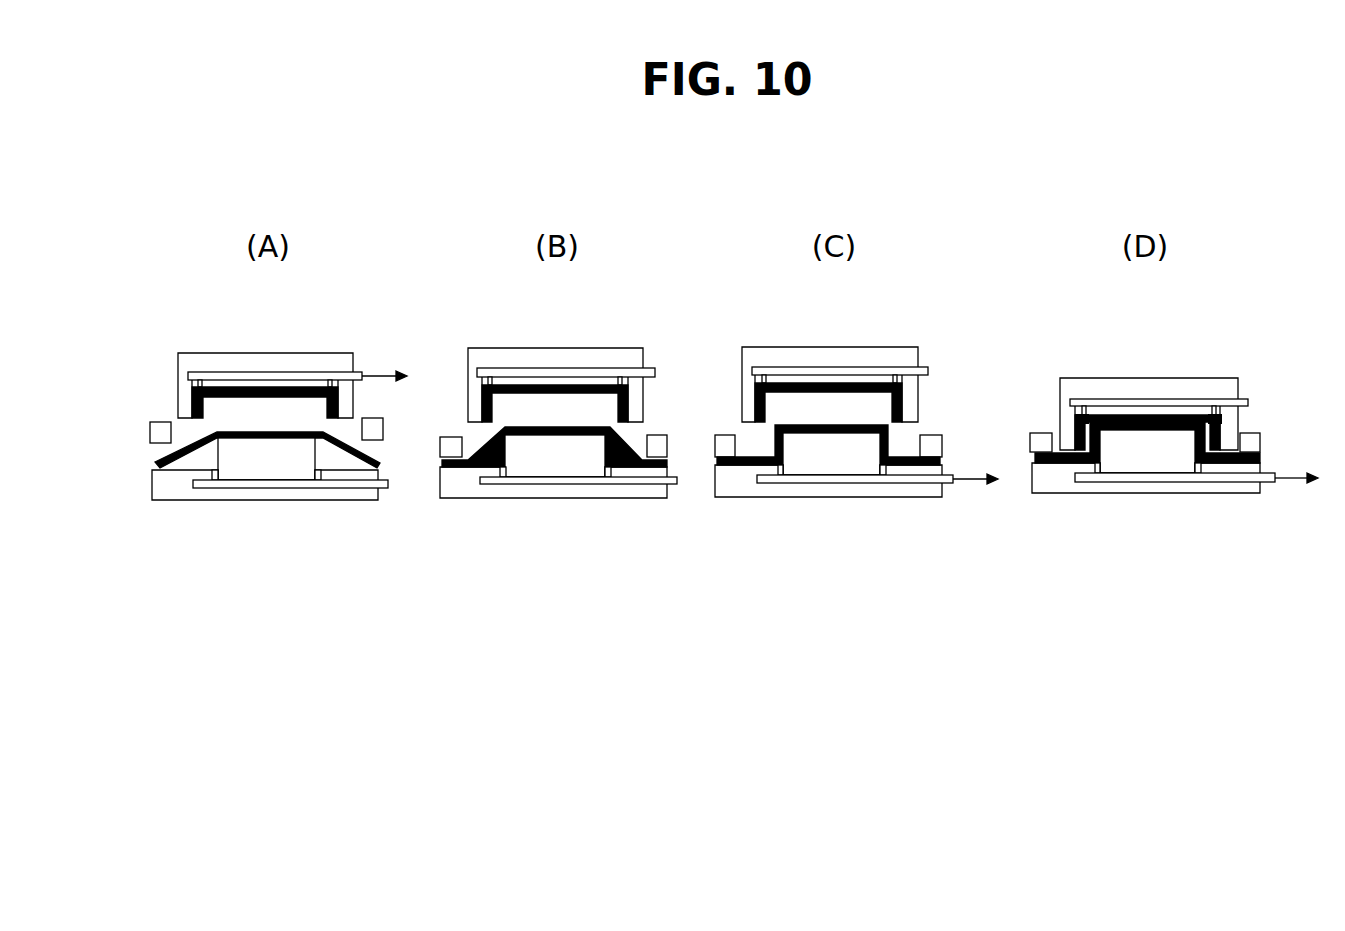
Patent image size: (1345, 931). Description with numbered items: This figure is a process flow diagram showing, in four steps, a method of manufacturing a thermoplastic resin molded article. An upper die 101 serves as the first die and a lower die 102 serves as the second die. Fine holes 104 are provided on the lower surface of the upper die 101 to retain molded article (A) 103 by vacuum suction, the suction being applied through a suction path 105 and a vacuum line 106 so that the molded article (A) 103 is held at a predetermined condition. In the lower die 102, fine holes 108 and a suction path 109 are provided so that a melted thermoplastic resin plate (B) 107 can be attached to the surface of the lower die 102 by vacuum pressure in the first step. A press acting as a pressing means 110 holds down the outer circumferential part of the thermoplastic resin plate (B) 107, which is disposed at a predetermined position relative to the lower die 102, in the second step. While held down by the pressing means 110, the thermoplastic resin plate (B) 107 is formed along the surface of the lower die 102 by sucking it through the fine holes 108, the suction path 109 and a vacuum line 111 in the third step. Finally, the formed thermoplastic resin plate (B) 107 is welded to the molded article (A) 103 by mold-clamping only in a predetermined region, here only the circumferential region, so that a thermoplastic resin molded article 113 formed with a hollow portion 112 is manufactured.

The upper die 101 is at (215, 353).
The lower die 102 is at (343, 499).
The molded article (A) 103 is at (316, 388).
The fine holes 104 is at (198, 387).
The suction path 105 is at (270, 372).
The vacuum line 106 is at (378, 374).
The thermoplastic resin plate (B) 107 is at (211, 433).
The fine holes 108 is at (213, 483).
The suction path 109 is at (273, 489).
The pressing means 110 is at (375, 441).
The vacuum line 111 is at (968, 481).
The hollow portion 112 is at (1222, 422).
The thermoplastic resin molded article 113 is at (1108, 415).